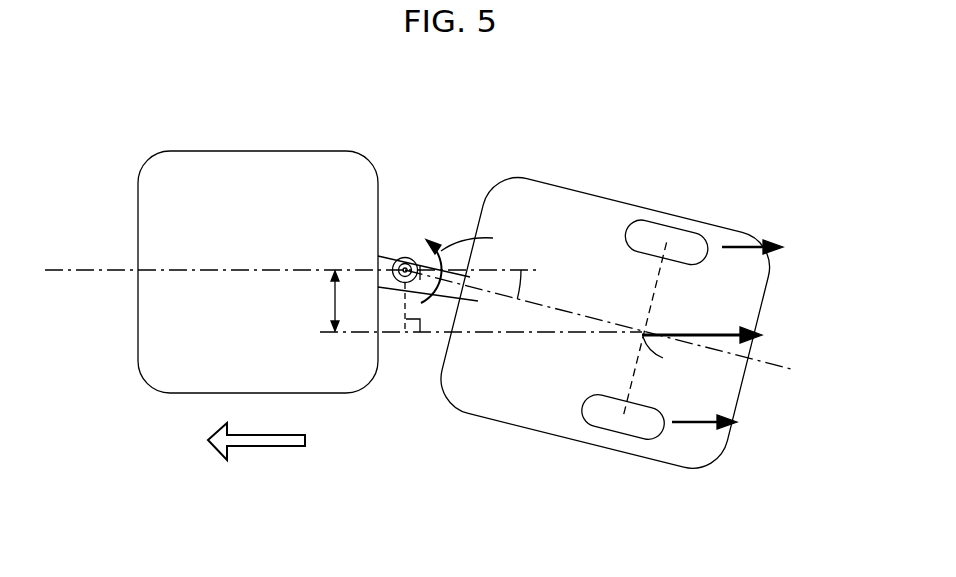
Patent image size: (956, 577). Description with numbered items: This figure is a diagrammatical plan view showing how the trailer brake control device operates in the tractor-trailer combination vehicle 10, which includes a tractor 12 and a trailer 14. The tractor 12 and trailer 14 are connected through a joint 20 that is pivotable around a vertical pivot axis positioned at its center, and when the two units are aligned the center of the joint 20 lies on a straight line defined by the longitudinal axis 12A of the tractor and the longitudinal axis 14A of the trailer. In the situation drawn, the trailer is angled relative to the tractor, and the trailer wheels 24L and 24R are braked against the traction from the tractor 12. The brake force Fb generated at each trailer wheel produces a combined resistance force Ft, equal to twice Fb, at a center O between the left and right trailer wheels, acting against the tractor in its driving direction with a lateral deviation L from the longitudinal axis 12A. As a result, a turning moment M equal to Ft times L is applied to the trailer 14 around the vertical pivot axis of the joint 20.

The combination vehicle 10 is at (462, 121).
The tractor 12 is at (198, 151).
The longitudinal axis of the tractor 12A is at (168, 268).
The trailer 14 is at (605, 331).
The longitudinal axis of the trailer 14A is at (572, 313).
The joint 20 is at (403, 253).
The right wheel of the trailer 24R is at (666, 242).
The left wheel of the trailer 24L is at (622, 416).